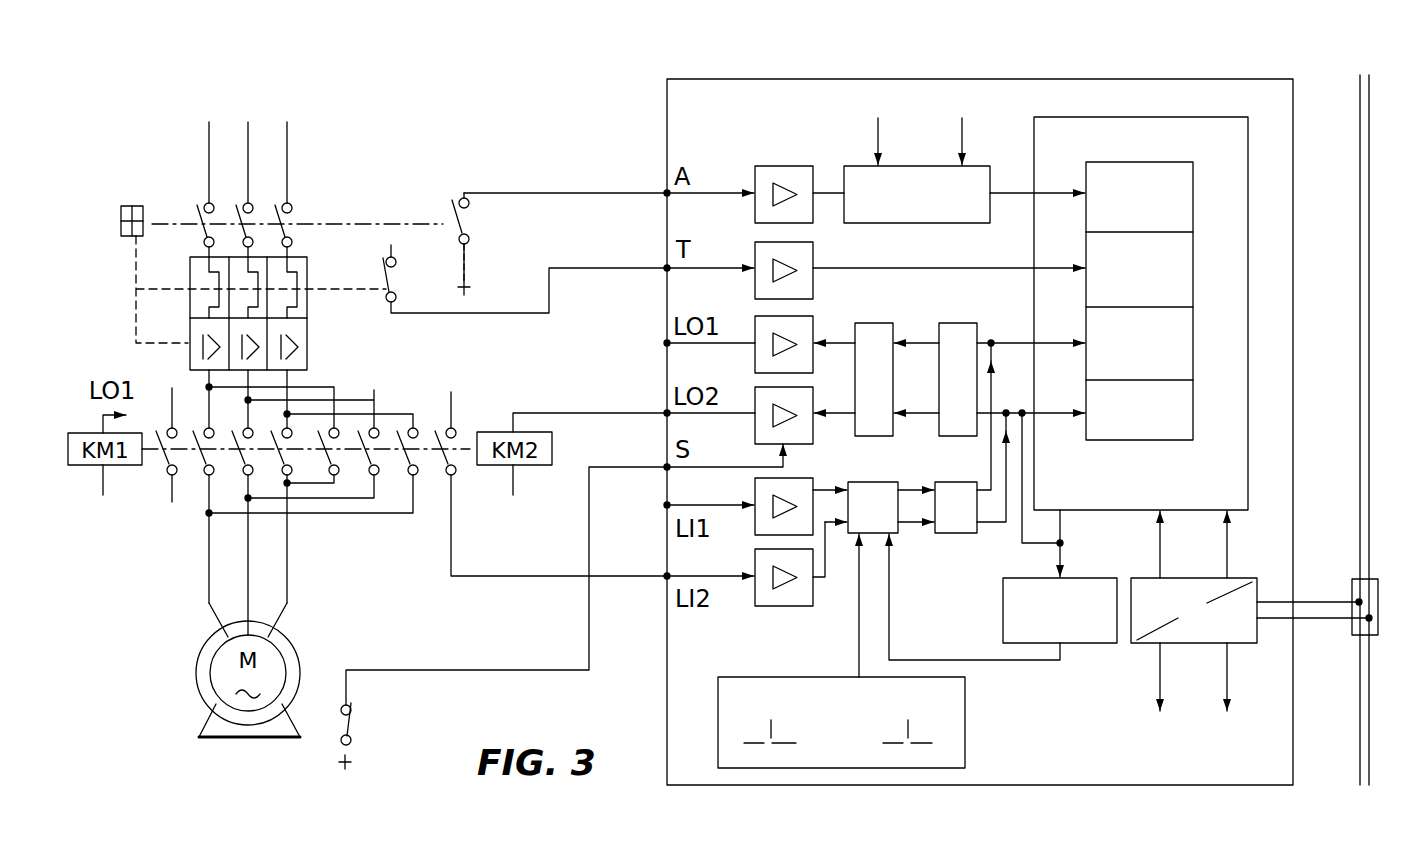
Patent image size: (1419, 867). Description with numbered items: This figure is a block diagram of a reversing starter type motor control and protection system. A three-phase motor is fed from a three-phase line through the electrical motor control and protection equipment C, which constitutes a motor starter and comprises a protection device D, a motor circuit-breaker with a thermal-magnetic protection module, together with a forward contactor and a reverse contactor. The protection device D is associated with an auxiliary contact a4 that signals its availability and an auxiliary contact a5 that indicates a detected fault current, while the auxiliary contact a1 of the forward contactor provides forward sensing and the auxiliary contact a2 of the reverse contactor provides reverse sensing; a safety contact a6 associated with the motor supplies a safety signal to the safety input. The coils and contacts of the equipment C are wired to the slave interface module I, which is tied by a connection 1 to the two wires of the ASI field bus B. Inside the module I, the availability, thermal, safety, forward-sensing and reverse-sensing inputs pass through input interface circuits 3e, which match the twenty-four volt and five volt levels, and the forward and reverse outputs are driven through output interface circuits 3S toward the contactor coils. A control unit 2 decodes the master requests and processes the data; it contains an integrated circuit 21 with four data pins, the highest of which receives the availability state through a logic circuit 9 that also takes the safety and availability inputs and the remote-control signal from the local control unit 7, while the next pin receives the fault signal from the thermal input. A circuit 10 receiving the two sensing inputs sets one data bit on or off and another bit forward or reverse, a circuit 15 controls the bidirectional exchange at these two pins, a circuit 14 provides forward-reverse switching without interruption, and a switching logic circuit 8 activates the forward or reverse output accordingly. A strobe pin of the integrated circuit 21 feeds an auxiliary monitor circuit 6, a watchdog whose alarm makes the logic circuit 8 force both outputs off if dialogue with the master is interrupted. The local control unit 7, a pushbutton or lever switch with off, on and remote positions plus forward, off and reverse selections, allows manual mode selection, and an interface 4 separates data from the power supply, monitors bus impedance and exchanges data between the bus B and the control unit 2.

The connection 1 is at (1352, 590).
The control unit 2 is at (1155, 117).
The input interface circuit 3e is at (806, 214).
The output interface circuit 3S is at (812, 348).
The interface 4 is at (1250, 645).
The auxiliary monitor circuit 6 is at (1003, 612).
The local control unit 7 is at (718, 717).
The logic circuit 8 is at (873, 323).
The logic circuit 9 is at (989, 205).
The circuit 10 is at (898, 531).
The circuit 14 is at (958, 323).
The circuit 15 is at (960, 535).
The integrated circuit 21 is at (1193, 212).
The interface module I is at (1050, 79).
The field bus B is at (1376, 236).
The electrical motor control and protection equipment C is at (343, 148).
The protection device D is at (130, 285).
The auxiliary contact a1 is at (160, 472).
The auxiliary contact a2 is at (462, 436).
The auxiliary contact a4 is at (475, 222).
The auxiliary contact a5 is at (383, 296).
The safety contact a6 is at (358, 718).